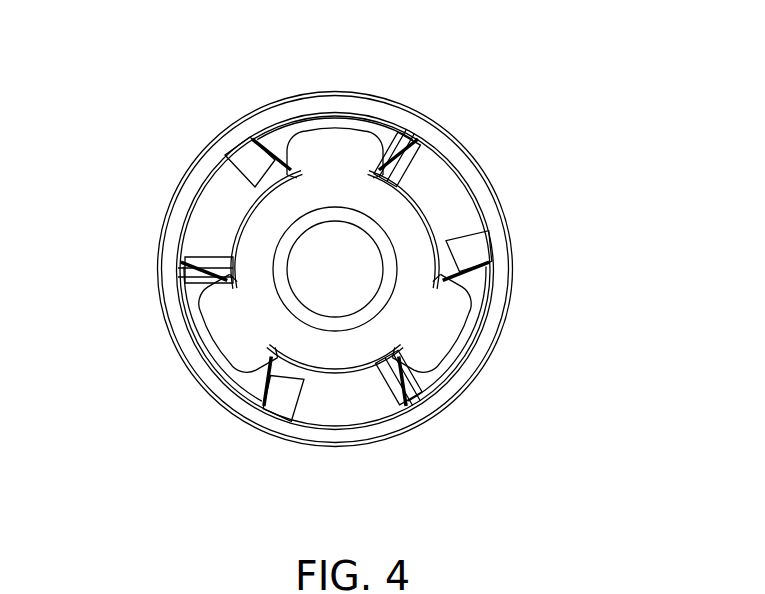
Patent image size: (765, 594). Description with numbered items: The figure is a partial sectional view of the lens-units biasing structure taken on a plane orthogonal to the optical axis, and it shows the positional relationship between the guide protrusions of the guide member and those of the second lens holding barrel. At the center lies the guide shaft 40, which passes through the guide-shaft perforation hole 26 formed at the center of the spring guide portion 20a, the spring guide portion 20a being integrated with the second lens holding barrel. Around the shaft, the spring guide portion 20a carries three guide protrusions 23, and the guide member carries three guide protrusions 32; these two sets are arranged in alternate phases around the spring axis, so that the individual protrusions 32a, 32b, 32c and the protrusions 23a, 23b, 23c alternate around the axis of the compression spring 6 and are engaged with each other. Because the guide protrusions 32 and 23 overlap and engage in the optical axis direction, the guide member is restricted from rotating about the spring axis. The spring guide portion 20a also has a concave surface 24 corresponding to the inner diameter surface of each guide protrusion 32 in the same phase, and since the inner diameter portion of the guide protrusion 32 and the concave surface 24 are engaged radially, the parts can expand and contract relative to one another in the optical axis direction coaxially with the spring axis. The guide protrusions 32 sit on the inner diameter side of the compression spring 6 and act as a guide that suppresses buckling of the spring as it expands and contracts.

The compression spring 6 is at (473, 360).
The spring guide portion 20a is at (335, 271).
The guide protrusion 23 is at (338, 147).
The protrusion 23a is at (355, 140).
The protrusion 23b is at (447, 342).
The protrusion 23c is at (237, 353).
The concave surface 24 is at (248, 200).
The guide-shaft perforation hole 26 is at (372, 218).
The guide protrusion 32 is at (210, 202).
The protrusion 32a is at (462, 217).
The protrusion 32b is at (305, 398).
The protrusion 32c is at (198, 240).
The guide shaft 40 is at (307, 267).